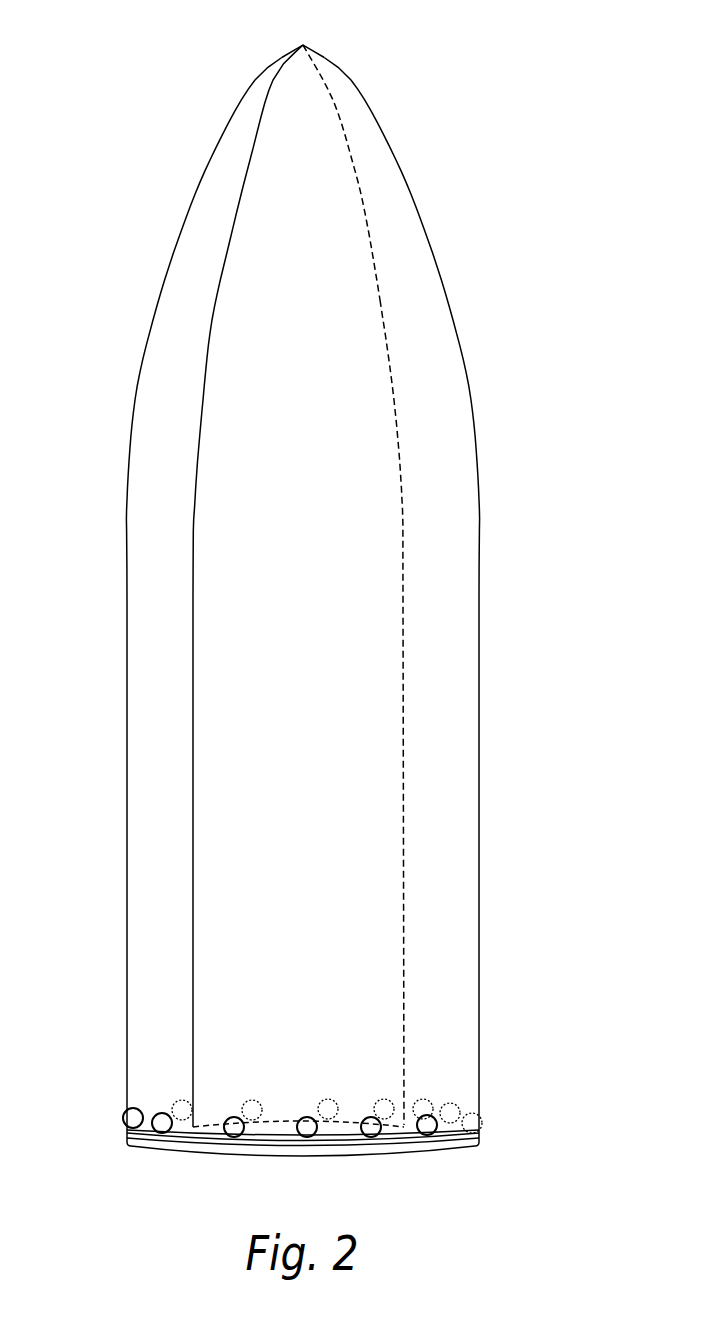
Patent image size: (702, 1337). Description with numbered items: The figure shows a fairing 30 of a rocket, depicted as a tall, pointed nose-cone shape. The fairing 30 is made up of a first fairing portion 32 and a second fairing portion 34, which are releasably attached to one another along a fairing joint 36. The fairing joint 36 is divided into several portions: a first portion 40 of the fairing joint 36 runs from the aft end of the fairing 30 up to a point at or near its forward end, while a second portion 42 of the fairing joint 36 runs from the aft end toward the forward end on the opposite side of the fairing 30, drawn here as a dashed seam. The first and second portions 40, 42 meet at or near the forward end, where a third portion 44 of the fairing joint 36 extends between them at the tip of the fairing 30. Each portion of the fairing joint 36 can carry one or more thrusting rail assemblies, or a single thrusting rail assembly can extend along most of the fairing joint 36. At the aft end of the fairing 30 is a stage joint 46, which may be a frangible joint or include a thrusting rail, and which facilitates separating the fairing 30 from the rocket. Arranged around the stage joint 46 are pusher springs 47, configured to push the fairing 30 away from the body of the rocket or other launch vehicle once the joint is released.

The fairing 30 is at (492, 71).
The first fairing portion 32 is at (167, 428).
The second fairing portion 34 is at (432, 468).
The fairing joint 36 is at (427, 742).
The first portion of the fairing joint 40 is at (208, 248).
The second portion of the fairing joint 42 is at (365, 212).
The third portion of the fairing joint 44 is at (270, 79).
The stage joint 46 is at (167, 1142).
The pusher springs 47 is at (378, 1140).